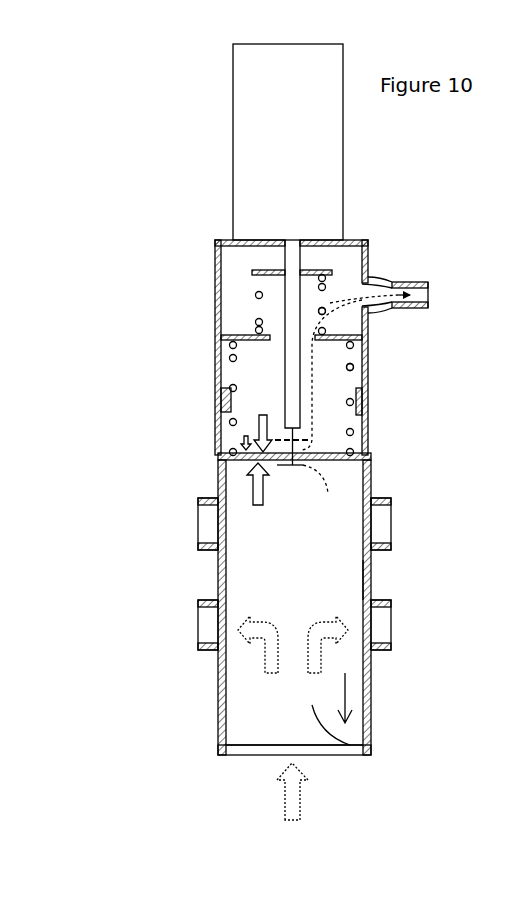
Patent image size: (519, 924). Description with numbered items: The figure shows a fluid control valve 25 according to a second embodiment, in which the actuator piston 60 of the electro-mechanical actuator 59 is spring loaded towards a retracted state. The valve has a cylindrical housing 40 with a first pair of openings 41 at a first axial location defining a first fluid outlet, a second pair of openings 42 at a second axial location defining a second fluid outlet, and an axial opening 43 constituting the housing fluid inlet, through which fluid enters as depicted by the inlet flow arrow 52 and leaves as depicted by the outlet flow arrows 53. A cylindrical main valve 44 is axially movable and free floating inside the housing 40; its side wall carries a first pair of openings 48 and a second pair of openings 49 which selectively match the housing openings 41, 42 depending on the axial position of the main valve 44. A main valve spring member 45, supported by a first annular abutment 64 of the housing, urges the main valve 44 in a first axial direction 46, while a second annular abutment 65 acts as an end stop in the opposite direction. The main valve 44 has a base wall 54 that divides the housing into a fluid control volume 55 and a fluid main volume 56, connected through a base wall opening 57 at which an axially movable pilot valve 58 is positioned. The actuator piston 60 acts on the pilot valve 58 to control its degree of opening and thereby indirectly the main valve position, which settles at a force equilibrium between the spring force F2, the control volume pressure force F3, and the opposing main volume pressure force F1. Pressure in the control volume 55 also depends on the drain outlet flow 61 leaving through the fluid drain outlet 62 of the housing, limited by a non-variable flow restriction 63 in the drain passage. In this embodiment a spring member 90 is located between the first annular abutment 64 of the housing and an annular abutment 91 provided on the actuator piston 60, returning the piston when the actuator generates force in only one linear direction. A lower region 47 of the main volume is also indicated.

The fluid control valve 25 is at (197, 101).
The electro-mechanical actuator 59 is at (258, 150).
The spring member 90 is at (259, 291).
The cylindrical housing 40 is at (215, 273).
The actuator piston 60 is at (290, 330).
The first annular abutment 64 is at (224, 340).
The base wall opening 57 is at (285, 450).
The axial force F3 is at (254, 428).
The axial force F2 is at (243, 447).
The axial force F1 is at (250, 490).
The second pair of openings 42 is at (205, 518).
The first pair of openings 41 is at (205, 620).
The outlet flow arrows 53 is at (313, 660).
The bottom chamber 47 is at (283, 725).
The axial opening 43 is at (310, 752).
The inlet flow arrow 52 is at (290, 793).
The annular abutment 91 is at (313, 270).
The non-variable flow restriction 63 is at (395, 283).
The fluid drain outlet 62 is at (428, 290).
The fluid control volume 55 is at (350, 355).
The main valve spring member 45 is at (328, 360).
The second annular abutment 65 is at (368, 395).
The drain outlet flow 61 is at (320, 418).
The base wall 54 is at (335, 456).
The pilot valve 58 is at (330, 470).
The fluid main volume 56 is at (305, 510).
The second pair of openings of the main valve 49 is at (330, 573).
The first pair of openings of the main valve 48 is at (378, 615).
The first axial direction 46 is at (345, 706).
The cylindrical main valve 44 is at (348, 745).